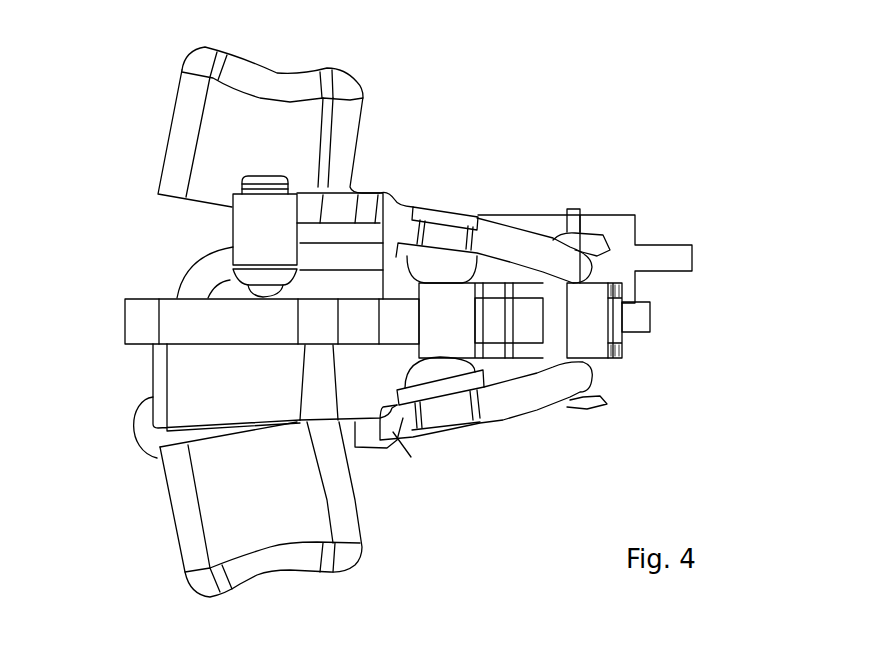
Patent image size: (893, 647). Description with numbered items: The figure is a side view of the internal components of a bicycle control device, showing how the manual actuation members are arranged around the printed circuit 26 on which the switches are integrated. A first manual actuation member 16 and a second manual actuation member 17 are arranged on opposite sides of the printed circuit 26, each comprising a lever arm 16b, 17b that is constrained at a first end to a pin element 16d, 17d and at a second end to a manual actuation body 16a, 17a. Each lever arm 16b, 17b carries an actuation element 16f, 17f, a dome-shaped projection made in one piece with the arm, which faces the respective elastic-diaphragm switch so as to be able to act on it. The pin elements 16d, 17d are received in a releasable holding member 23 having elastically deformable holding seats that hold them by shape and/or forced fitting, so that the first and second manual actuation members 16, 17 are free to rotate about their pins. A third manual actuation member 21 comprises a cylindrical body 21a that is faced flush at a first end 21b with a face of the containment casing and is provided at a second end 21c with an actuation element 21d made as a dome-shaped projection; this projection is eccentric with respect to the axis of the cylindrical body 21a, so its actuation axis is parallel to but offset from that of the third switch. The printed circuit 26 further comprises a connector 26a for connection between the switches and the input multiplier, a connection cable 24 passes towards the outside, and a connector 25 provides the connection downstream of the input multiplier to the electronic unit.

The first manual actuation member 16 is at (380, 130).
The manual actuation body 16a is at (173, 137).
The lever arm 16b is at (390, 220).
The pin element 16d is at (570, 260).
The actuation element 16f is at (434, 277).
The second manual actuation member 17 is at (382, 476).
The manual actuation body 17a is at (180, 535).
The lever arm 17b is at (440, 370).
The pin element 17d is at (575, 373).
The actuation element 17f is at (485, 390).
The third manual actuation member 21 is at (232, 235).
The cylindrical body 21a is at (281, 213).
The first end 21b is at (262, 178).
The second end 21c is at (233, 281).
The actuation element 21d is at (257, 293).
The releasable holding member 23 is at (547, 335).
The connection cable 24 is at (637, 318).
The connector 25 is at (617, 252).
The printed circuit 26 is at (137, 320).
The connector 26a is at (197, 370).